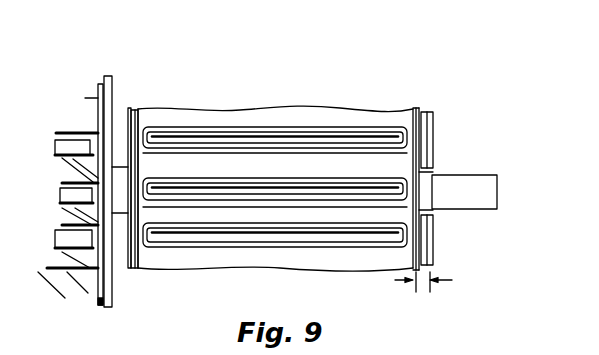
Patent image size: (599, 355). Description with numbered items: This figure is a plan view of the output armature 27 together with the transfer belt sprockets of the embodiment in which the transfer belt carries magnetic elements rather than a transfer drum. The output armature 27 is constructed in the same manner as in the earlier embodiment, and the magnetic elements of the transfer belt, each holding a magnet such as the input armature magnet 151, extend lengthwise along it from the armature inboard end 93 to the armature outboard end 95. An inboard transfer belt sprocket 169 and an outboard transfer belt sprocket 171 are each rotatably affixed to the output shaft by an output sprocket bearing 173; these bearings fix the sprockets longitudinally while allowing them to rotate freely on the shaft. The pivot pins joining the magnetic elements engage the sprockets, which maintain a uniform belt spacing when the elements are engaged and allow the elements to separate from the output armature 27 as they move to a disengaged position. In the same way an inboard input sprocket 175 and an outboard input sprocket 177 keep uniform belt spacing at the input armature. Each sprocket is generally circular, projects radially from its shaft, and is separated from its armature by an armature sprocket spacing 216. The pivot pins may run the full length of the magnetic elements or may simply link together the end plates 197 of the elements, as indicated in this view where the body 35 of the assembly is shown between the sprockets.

The output armature 27 is at (419, 128).
The rotor body 35 is at (202, 127).
The armature inboard end 93 is at (128, 118).
The armature outboard end 95 is at (418, 151).
The input armature magnet 151 is at (273, 137).
The inboard transfer belt sprocket 169 is at (75, 177).
The outboard transfer belt sprocket 171 is at (491, 240).
The output sprocket bearing 173 is at (117, 218).
The inboard input sprocket 175 is at (127, 134).
The outboard input sprocket 177 is at (434, 233).
The end plates 197 is at (418, 238).
The armature sprocket spacing 216 is at (395, 280).